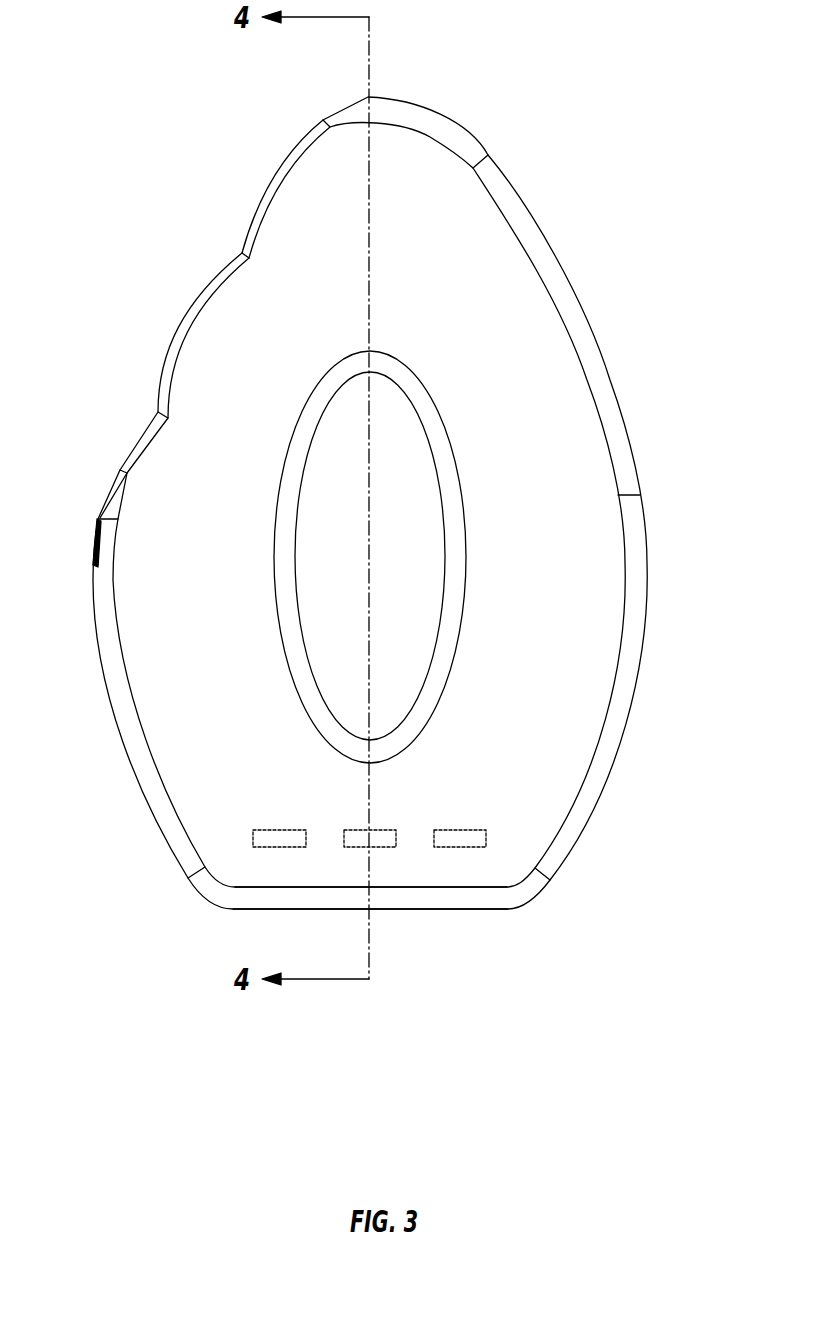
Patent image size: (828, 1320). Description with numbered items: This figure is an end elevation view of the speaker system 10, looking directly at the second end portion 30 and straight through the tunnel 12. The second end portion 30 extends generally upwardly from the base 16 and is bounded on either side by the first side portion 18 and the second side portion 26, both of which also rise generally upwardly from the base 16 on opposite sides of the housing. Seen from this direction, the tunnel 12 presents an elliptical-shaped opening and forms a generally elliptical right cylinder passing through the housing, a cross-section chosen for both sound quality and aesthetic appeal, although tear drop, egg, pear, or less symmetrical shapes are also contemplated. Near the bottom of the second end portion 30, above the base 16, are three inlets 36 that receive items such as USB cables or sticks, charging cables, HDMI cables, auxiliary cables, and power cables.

The speaker system 10 is at (211, 159).
The tunnel 12 is at (436, 466).
The base 16 is at (455, 911).
The first side portion 18 is at (645, 613).
The second side portion 26 is at (93, 590).
The second end portion 30 is at (495, 280).
The inlets 36 is at (283, 829).